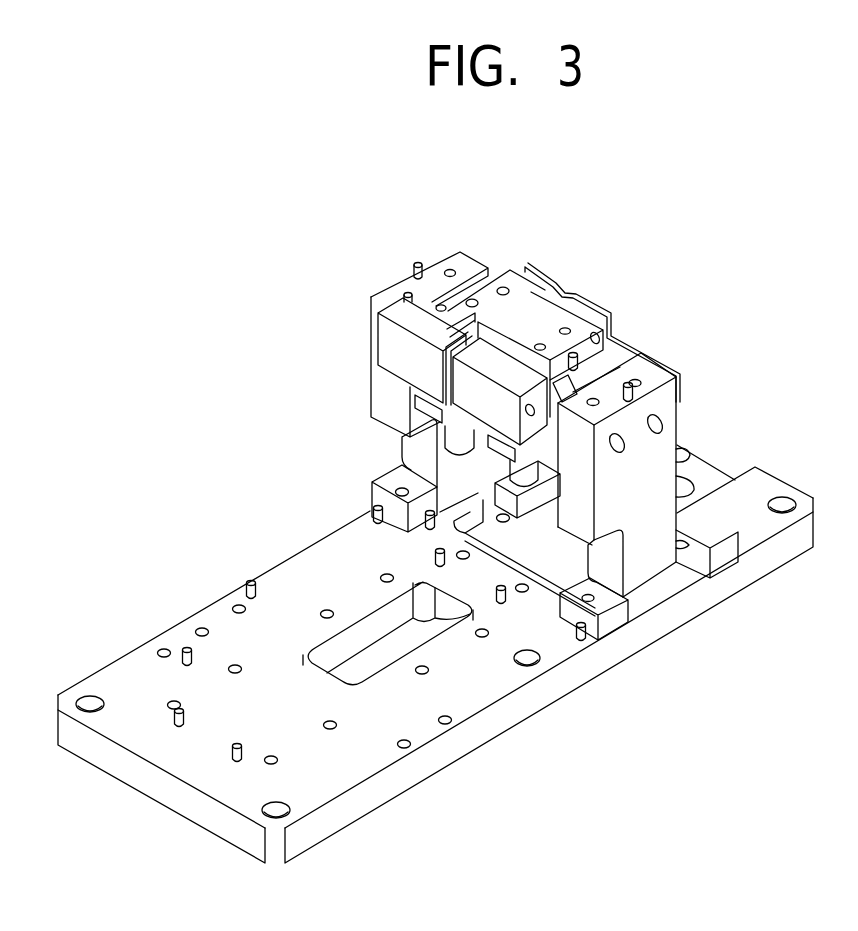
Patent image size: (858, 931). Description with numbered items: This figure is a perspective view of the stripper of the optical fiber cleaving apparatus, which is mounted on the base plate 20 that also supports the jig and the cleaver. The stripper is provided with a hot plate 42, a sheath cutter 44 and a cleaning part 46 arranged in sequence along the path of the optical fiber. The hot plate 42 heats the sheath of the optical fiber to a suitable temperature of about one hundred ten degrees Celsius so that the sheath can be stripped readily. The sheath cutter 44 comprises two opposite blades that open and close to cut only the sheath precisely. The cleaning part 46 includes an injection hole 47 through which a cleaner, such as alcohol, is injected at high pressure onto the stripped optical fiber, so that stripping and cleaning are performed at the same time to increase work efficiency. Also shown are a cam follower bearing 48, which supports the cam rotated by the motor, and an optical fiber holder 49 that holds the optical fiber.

The base plate 20 is at (744, 585).
The hot plate 42 is at (506, 375).
The sheath cutter 44 is at (430, 300).
The cleaning part 46 is at (576, 306).
The injection hole 47 is at (640, 360).
The cam follower bearing 48 is at (455, 439).
The optical fiber holder 49 is at (604, 312).